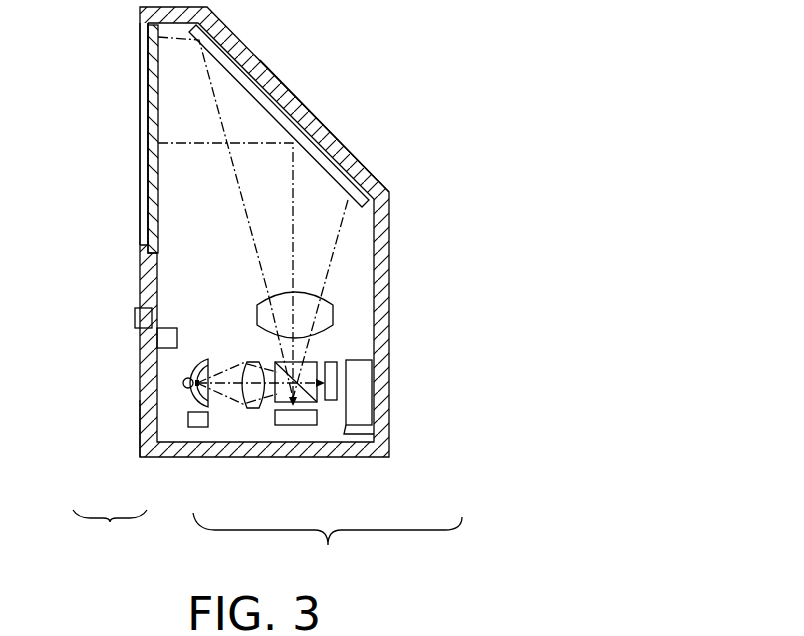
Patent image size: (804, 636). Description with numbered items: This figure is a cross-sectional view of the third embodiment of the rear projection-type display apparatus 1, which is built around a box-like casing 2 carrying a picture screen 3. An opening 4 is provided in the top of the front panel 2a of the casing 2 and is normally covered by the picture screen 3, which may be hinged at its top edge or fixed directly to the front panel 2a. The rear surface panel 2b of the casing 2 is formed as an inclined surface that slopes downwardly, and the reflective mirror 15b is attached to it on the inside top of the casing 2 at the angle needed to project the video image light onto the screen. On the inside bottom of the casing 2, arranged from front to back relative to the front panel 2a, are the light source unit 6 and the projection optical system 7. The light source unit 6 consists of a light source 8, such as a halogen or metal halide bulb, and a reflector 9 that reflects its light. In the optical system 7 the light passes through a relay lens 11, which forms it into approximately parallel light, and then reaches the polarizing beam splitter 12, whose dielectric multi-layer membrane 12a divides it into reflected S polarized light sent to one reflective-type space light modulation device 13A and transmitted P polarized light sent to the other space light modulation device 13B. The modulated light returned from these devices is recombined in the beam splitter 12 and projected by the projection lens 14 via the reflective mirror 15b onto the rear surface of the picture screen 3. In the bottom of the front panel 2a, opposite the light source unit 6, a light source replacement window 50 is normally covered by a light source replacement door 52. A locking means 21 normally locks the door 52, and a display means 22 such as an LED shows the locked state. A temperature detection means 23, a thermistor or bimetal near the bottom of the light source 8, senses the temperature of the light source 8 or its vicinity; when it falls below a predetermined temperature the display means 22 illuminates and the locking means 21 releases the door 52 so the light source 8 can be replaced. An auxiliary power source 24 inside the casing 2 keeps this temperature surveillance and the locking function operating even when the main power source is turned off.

The rear projection-type display apparatus 1 is at (463, 150).
The casing 2 is at (415, 299).
The front panel 2a is at (140, 430).
The rear surface panel 2b is at (330, 143).
The picture screen 3 is at (148, 118).
The opening 4 is at (142, 243).
The light source unit 6 is at (110, 537).
The optical system 7 is at (327, 546).
The light source 8 is at (184, 405).
The reflector 9 is at (188, 390).
The relay lens 11 is at (250, 408).
The polarizing beam splitter 12 is at (280, 403).
The dielectric multi-layer membrane 12a is at (275, 360).
The space light modulation device 13A is at (293, 426).
The space light modulation device 13B is at (331, 401).
The projection lens 14 is at (374, 434).
The reflective mirror 15b is at (278, 117).
The locking means 21 is at (158, 347).
The display means 22 is at (137, 313).
The temperature detection means 23 is at (198, 428).
The auxiliary power source 24 is at (365, 400).
The light source replacement window 50 is at (143, 403).
The light source replacement door 52 is at (145, 363).